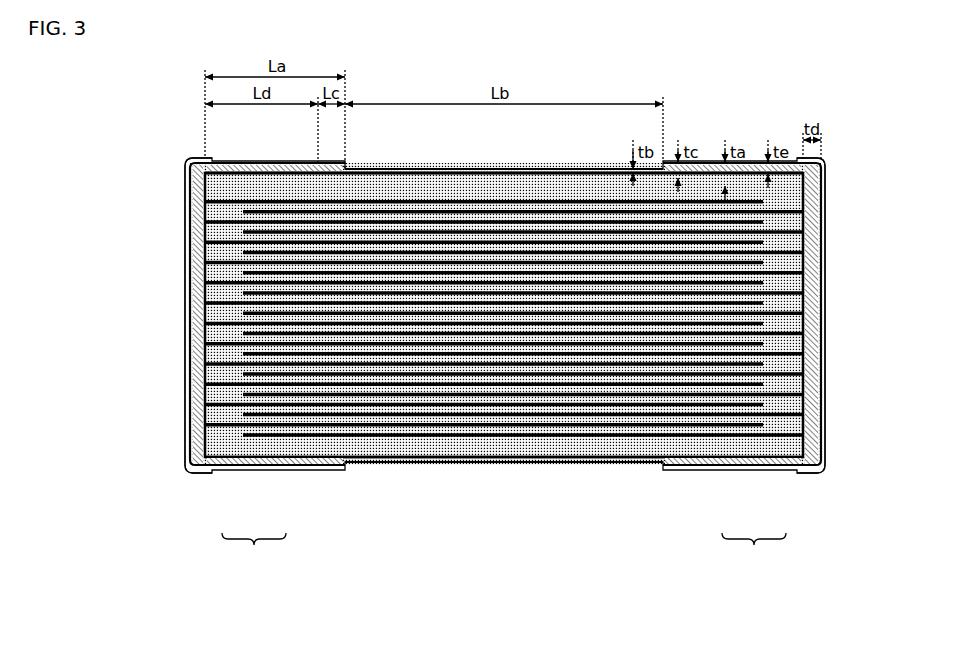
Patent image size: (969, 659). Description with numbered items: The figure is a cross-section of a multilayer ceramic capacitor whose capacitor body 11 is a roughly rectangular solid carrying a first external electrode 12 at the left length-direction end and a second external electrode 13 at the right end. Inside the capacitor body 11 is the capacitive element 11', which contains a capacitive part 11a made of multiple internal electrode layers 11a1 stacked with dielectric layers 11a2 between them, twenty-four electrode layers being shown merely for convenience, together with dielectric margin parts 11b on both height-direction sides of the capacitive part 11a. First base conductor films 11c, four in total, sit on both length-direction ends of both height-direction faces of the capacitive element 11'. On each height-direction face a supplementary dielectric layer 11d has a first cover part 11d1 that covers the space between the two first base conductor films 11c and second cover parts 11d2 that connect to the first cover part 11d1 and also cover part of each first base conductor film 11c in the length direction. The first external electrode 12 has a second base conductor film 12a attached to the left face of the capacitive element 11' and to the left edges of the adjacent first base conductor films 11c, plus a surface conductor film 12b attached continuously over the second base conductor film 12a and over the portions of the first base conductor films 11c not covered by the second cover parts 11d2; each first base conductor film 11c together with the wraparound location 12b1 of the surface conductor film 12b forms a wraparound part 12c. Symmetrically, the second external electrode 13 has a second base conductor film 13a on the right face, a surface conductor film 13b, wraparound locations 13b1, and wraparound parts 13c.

The capacitor body 11 is at (505, 294).
The capacitive element 11' is at (504, 142).
The capacitive part 11a is at (470, 192).
The internal electrode layer 11a1 is at (418, 440).
The dielectric layer 11a2 is at (471, 430).
The dielectric margin part 11b is at (514, 192).
The first base conductor film 11c is at (212, 183).
The supplementary dielectric layer 11d is at (578, 505).
The first cover part 11d1 is at (504, 322).
The second cover part 11d2 is at (322, 163).
The first external electrode 12 is at (228, 343).
The second base conductor film 12a is at (197, 257).
The surface conductor film 12b is at (228, 322).
The wraparound location 12b1 is at (231, 169).
The wraparound part 12c is at (254, 551).
The second external electrode 13 is at (781, 337).
The second base conductor film 13a is at (813, 257).
The surface conductor film 13b is at (781, 316).
The wraparound location 13b1 is at (762, 163).
The wraparound part 13c is at (754, 551).